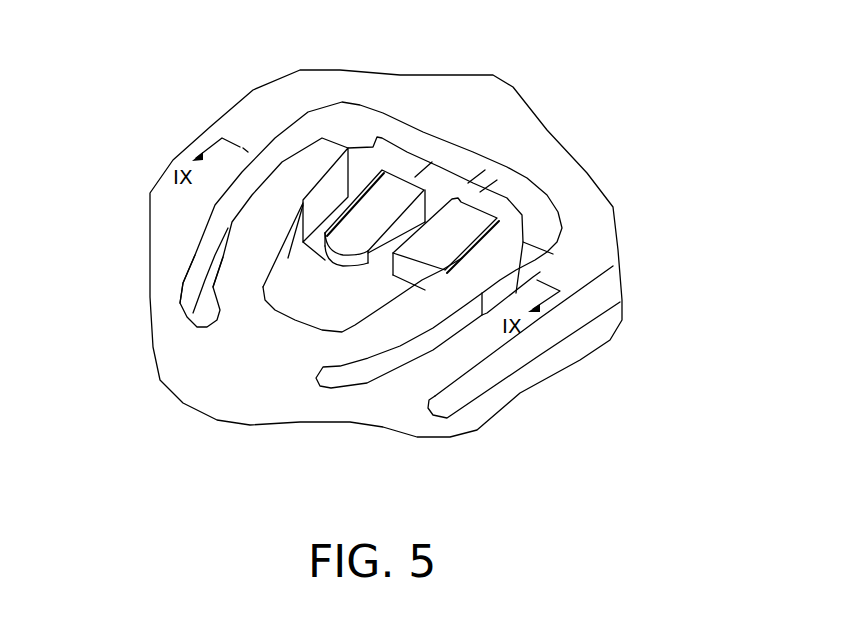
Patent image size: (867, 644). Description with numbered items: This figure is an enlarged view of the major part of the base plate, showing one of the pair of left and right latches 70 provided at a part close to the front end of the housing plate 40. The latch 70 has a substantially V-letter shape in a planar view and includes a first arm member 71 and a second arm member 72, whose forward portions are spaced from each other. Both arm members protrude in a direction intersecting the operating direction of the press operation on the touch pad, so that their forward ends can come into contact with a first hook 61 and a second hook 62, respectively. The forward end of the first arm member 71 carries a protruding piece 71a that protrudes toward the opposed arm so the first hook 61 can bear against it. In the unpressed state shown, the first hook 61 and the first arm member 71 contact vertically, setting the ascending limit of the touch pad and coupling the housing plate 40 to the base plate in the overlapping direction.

The housing plate 40 is at (383, 262).
The latch 70 is at (371, 292).
The first arm member 71 is at (229, 178).
The protruding piece 71a is at (204, 214).
The second arm member 72 is at (551, 329).
The first hook 61 is at (388, 139).
The second hook 62 is at (500, 180).